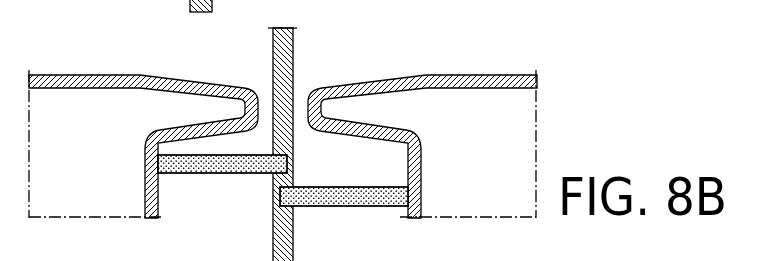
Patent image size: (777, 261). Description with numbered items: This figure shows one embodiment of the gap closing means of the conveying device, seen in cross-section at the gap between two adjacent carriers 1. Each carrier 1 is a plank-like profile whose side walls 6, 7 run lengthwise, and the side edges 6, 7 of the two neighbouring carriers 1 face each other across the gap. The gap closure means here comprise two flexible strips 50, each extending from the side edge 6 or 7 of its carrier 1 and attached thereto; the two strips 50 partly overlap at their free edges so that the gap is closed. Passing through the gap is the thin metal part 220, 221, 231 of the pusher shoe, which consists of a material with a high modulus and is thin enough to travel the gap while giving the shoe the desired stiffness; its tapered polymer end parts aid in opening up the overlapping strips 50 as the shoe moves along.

The carrier 1 is at (57, 67).
The side wall 6 is at (422, 147).
The side wall 7 is at (145, 148).
The flexible strip 50 is at (218, 174).
The metal part 220 is at (384, 141).
The metal part 221 is at (384, 141).
The metal part 231 is at (293, 43).